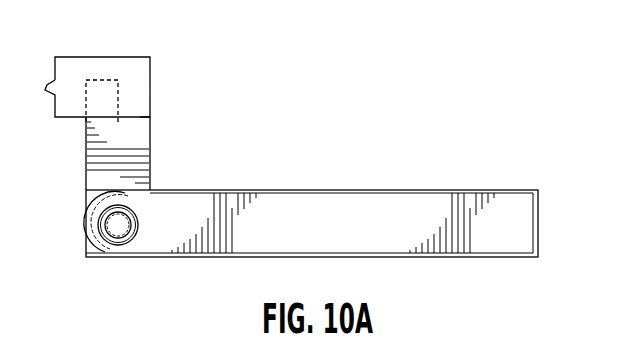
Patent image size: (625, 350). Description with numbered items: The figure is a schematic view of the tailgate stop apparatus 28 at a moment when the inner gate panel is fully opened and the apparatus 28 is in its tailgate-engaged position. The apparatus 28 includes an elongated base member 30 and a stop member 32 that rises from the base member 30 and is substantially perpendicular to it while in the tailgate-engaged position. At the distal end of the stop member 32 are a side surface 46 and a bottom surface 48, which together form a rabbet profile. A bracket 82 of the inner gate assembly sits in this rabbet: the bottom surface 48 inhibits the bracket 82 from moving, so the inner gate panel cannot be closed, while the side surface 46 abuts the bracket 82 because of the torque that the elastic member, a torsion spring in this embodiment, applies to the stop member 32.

The apparatus 28 is at (482, 96).
The base member 30 is at (397, 189).
The stop member 32 is at (86, 182).
The side surface 46 is at (118, 88).
The bottom surface 48 is at (148, 108).
The bracket 82 is at (150, 70).